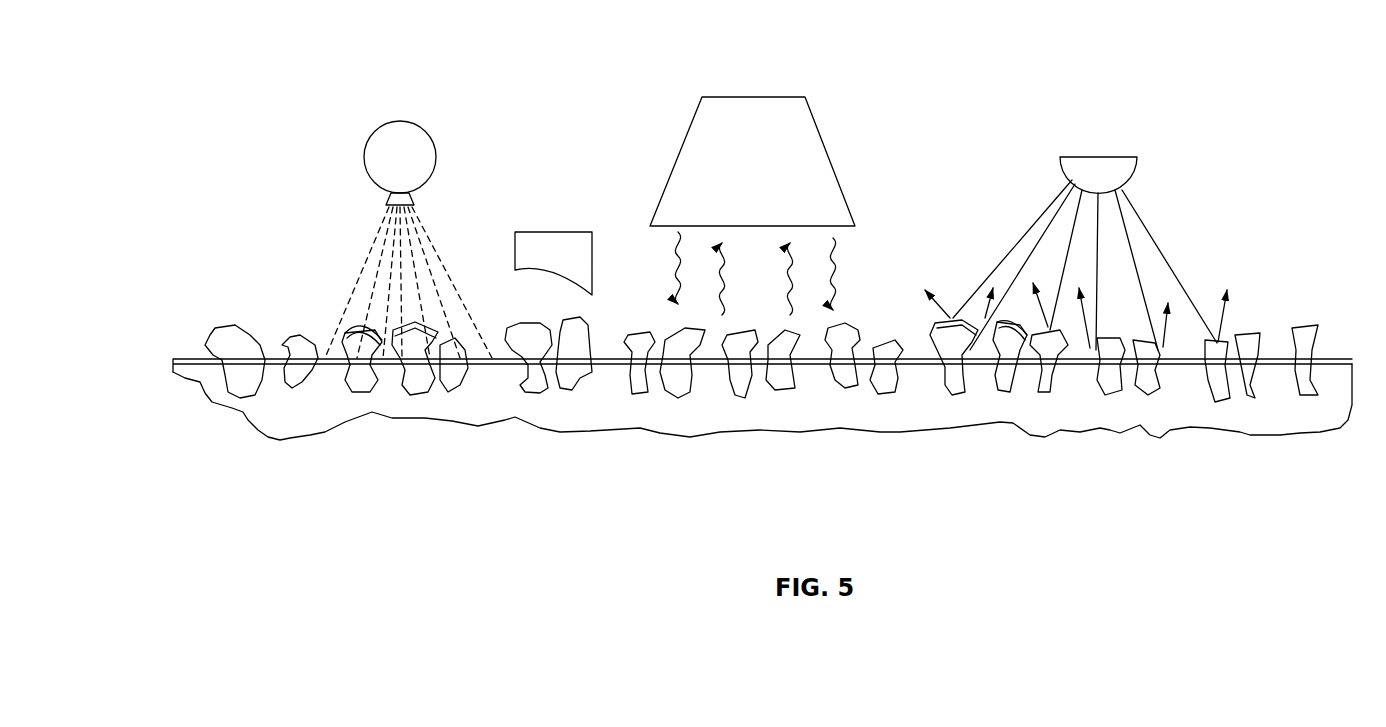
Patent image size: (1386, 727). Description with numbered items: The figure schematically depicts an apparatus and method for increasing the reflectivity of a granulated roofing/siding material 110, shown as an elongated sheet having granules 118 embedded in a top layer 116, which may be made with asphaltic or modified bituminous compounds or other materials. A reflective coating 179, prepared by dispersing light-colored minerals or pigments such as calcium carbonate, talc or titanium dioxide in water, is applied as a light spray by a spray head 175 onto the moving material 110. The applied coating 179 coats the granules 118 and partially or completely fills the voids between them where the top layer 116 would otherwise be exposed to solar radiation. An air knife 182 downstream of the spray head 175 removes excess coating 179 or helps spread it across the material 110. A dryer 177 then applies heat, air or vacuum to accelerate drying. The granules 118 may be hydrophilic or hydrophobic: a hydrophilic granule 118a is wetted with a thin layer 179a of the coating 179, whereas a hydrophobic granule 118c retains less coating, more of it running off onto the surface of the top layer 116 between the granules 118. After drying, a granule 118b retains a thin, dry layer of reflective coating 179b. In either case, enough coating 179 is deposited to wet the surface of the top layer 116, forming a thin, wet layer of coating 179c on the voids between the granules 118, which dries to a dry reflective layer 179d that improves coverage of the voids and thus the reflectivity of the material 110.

The roofing/siding material 110 is at (1250, 462).
The top layer 116 is at (257, 420).
The granules 118 is at (213, 328).
The hydrophilic granule 118a is at (357, 388).
The dried granule 118b is at (1010, 380).
The hydrophobic granule 118c is at (413, 380).
The spray head 175 is at (398, 138).
The dryer 177 is at (752, 108).
The reflective coating 179 is at (362, 262).
The thin layer of coating 179a is at (362, 332).
The thin dry layer of reflective coating 179b is at (1000, 375).
The thin wet layer of coating 179c is at (608, 362).
The dry reflective layer 179d is at (1268, 360).
The air knife 182 is at (552, 240).